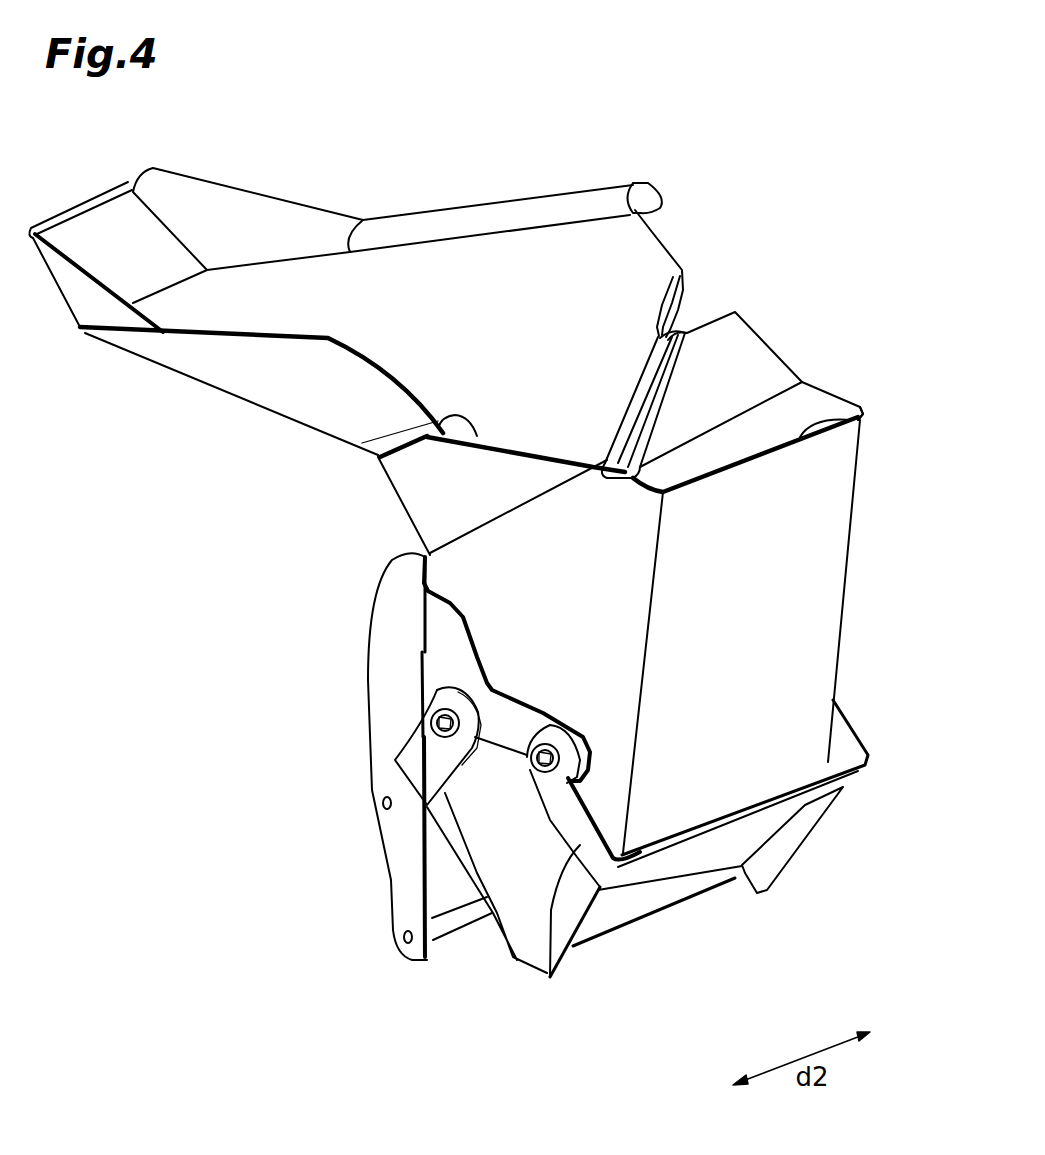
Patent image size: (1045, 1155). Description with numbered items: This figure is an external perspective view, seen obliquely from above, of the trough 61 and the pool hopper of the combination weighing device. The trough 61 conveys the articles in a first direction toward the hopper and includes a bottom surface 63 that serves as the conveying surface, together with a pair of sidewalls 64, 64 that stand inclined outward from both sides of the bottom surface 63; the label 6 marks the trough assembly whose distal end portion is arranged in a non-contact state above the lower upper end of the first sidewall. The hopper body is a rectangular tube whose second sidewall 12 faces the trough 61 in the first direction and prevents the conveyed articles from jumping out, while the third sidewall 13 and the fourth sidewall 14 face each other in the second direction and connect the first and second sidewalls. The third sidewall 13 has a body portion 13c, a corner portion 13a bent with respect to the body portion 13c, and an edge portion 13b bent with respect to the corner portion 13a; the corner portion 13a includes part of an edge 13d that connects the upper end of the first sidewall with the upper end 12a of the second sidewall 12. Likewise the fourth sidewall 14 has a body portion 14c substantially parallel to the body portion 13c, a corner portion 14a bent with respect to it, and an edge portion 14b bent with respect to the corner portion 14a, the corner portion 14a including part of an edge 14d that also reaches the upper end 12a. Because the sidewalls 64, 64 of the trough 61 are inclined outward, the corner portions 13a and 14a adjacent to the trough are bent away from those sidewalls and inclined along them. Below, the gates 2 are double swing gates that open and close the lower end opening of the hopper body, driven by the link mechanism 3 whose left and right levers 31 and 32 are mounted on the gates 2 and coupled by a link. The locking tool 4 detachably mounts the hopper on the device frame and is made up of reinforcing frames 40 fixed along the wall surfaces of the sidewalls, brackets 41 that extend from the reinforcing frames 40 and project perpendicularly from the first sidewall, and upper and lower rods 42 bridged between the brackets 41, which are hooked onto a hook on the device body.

The gates 2 is at (648, 890).
The link mechanism 3 is at (517, 823).
The locking tool 4 is at (347, 756).
The rail 6 is at (345, 276).
The trough 61 is at (345, 308).
The second sidewall 12 is at (685, 628).
The upper end of the second sidewall 12a is at (860, 417).
The third sidewall 13 is at (774, 374).
The corner portion 13a is at (763, 357).
The edge portion 13b is at (683, 270).
The body portion 13c is at (848, 408).
The edge 13d is at (748, 307).
The fourth sidewall 14 is at (450, 598).
The corner portion 14a is at (415, 482).
The edge portion 14b is at (367, 463).
The body portion 14c is at (520, 667).
The edge 14d is at (362, 443).
The lever 31 is at (433, 777).
The lever 32 is at (550, 977).
The reinforcing frames 40 is at (373, 648).
The brackets 41 is at (387, 717).
The rods 42 is at (362, 872).
The bottom surface 63 is at (197, 313).
The sidewalls 64 is at (450, 264).